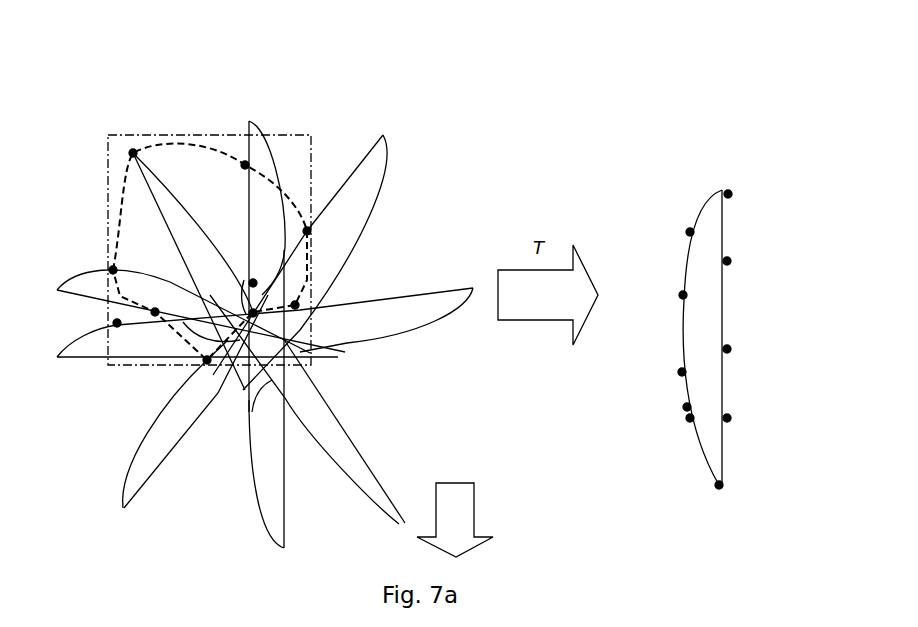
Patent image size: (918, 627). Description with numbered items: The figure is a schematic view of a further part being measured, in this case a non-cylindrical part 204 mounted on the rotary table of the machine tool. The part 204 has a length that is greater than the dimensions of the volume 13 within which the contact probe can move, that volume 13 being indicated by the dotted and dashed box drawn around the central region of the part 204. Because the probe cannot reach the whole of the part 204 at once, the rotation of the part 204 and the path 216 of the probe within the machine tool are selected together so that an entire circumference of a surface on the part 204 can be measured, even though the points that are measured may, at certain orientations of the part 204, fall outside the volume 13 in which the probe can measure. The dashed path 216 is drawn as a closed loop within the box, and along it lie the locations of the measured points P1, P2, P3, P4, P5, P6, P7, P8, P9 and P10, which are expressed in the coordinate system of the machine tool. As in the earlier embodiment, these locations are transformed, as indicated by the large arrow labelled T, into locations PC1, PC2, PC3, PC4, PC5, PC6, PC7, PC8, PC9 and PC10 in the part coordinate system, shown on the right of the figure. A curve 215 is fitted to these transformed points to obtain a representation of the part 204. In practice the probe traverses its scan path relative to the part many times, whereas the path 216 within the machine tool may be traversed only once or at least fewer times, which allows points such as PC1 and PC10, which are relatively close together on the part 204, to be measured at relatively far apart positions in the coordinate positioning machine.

The path of the probe 216 is at (186, 135).
The volume within which the probe can move 13 is at (288, 132).
The non-cylindrical part 204 is at (388, 160).
The curve 215 is at (727, 236).
The location of measured point P1 is at (101, 314).
The location of measured point P2 is at (132, 133).
The location of measured point P3 is at (233, 175).
The location of measured point P4 is at (313, 213).
The location of measured point P5 is at (320, 294).
The location of measured point P6 is at (248, 271).
The location of measured point P7 is at (238, 304).
The location of measured point P8 is at (212, 376).
The location of measured point P9 is at (157, 295).
The location of measured point P10 is at (86, 260).
The location in part coordinate system PC1 is at (676, 431).
The location in part coordinate system PC2 is at (706, 501).
The location in part coordinate system PC3 is at (756, 419).
The location in part coordinate system PC4 is at (748, 347).
The location in part coordinate system PC5 is at (749, 260).
The location in part coordinate system PC6 is at (750, 191).
The location in part coordinate system PC7 is at (668, 227).
The location in part coordinate system PC8 is at (659, 295).
The location in part coordinate system PC9 is at (661, 365).
The location in part coordinate system PC10 is at (661, 400).